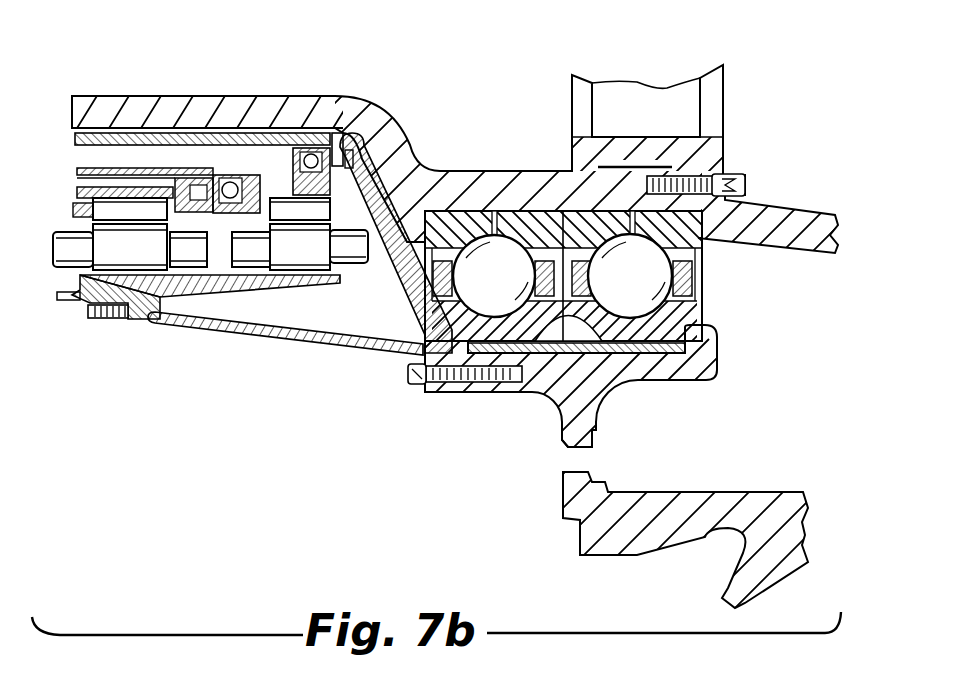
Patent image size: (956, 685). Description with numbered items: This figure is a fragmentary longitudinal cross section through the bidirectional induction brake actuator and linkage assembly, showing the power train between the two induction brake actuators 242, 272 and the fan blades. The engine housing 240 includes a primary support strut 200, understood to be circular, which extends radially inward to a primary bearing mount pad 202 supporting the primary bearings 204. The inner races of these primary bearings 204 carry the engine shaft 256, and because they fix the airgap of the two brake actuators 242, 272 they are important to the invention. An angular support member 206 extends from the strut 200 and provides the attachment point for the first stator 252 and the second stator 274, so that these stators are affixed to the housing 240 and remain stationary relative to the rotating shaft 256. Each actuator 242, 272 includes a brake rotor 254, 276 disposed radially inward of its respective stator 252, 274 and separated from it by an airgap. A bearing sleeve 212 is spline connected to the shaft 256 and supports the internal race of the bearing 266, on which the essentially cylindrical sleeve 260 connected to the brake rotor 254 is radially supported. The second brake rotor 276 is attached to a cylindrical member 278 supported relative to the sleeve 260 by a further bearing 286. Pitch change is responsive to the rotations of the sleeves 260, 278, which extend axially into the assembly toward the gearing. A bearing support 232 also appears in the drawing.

The primary support strut 200 is at (596, 485).
The primary bearing mount pad 202 is at (653, 355).
The primary bearings 204 is at (705, 267).
The angular support member 206 is at (378, 352).
The bearing sleeve 212 is at (130, 127).
The bearing support 232 is at (184, 267).
The engine housing 240 is at (747, 490).
The induction brake actuator 242 is at (364, 260).
The first stator 252 is at (320, 258).
The brake rotor 254 is at (320, 218).
The engine shaft 256 is at (397, 130).
The cylindrical sleeve 260 is at (290, 175).
The bearing 266 is at (333, 133).
The induction brake actuator 272 is at (50, 276).
The second stator 274 is at (150, 258).
The second brake rotor 276 is at (150, 218).
The cylindrical member 278 is at (80, 187).
The bearing 286 is at (236, 175).